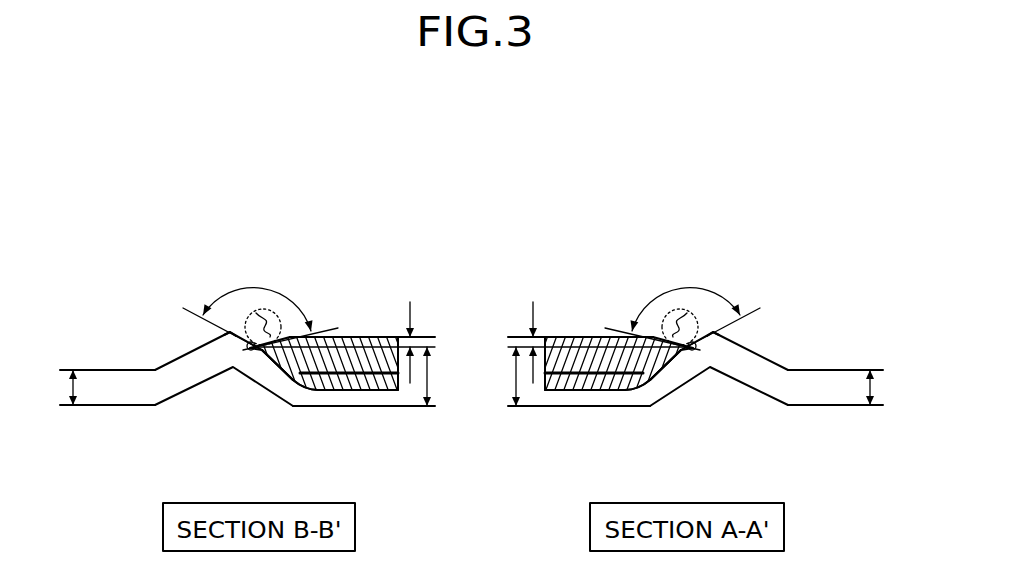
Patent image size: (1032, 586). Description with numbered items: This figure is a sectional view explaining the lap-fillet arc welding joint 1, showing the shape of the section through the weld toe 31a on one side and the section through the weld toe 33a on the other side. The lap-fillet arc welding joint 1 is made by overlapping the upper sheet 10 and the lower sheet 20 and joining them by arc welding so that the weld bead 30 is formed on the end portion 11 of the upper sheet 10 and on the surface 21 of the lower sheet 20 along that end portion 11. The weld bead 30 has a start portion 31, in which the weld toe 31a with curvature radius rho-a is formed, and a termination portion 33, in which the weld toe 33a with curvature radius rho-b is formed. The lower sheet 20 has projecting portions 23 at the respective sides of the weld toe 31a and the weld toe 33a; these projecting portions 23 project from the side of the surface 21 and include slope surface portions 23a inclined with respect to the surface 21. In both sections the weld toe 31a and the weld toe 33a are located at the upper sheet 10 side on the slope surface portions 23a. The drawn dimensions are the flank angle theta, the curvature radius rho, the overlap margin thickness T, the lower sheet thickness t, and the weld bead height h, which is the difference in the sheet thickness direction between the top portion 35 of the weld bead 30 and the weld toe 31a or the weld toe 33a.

The lap-fillet arc welding joint 1 is at (471, 300).
The upper sheet 10 is at (388, 352).
The end portion 11 is at (331, 345).
The lower sheet 20 is at (471, 365).
The surface 21 is at (98, 370).
The projecting portion 23 is at (192, 348).
The slope surface portion 23a is at (228, 337).
The weld bead 30 is at (366, 324).
The start portion 31 is at (613, 397).
The weld toe 31a is at (687, 401).
The termination portion 33 is at (289, 383).
The weld toe 33a is at (249, 351).
The top portion 35 is at (347, 338).